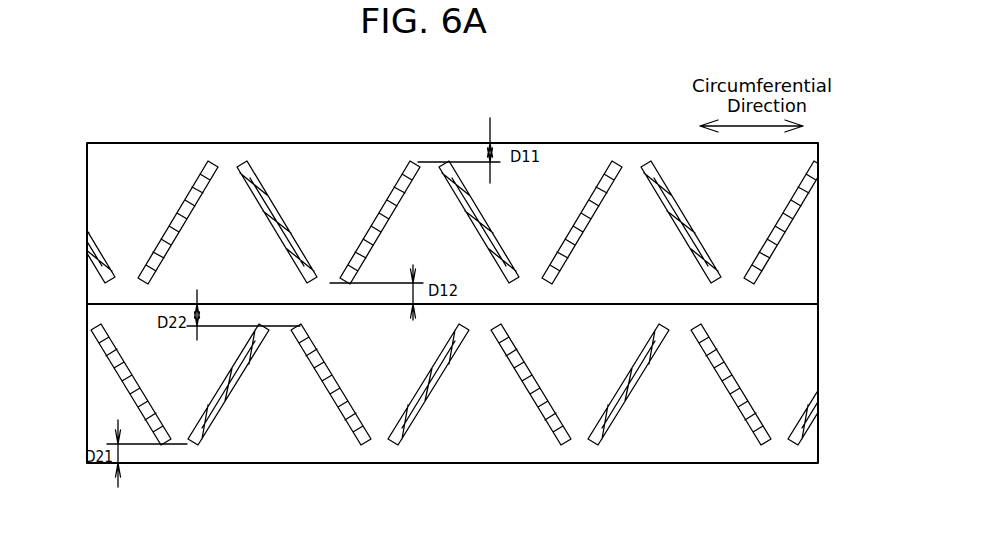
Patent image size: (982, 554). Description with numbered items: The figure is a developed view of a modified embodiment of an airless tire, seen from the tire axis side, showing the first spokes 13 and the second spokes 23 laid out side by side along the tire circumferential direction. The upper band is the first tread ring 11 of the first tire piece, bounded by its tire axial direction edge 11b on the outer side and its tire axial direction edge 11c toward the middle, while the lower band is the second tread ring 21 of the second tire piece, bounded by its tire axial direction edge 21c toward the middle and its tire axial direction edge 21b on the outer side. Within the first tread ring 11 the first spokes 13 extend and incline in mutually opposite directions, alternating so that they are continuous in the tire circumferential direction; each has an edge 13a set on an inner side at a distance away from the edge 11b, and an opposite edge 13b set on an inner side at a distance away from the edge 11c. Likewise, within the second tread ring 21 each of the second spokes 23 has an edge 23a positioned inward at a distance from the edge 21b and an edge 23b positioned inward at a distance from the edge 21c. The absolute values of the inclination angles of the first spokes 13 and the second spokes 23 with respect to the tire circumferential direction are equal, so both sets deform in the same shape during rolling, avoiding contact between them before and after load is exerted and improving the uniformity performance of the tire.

The first tread ring 11 is at (302, 178).
The tire axial direction edge of the first tread ring 11b is at (215, 143).
The tire axial direction edge of the first tread ring 11c is at (783, 304).
The first spokes 13 is at (369, 232).
The edge of the first spoke 13a is at (414, 164).
The edge of the first spoke 13b is at (343, 283).
The second tread ring 21 is at (665, 427).
The tire axial direction edge of the second tread ring 21b is at (215, 463).
The tire axial direction edge of the second tread ring 21c is at (748, 304).
The second spokes 23 is at (125, 381).
The edge of the second spoke 23a is at (190, 446).
The edge of the second spoke 23b is at (268, 306).